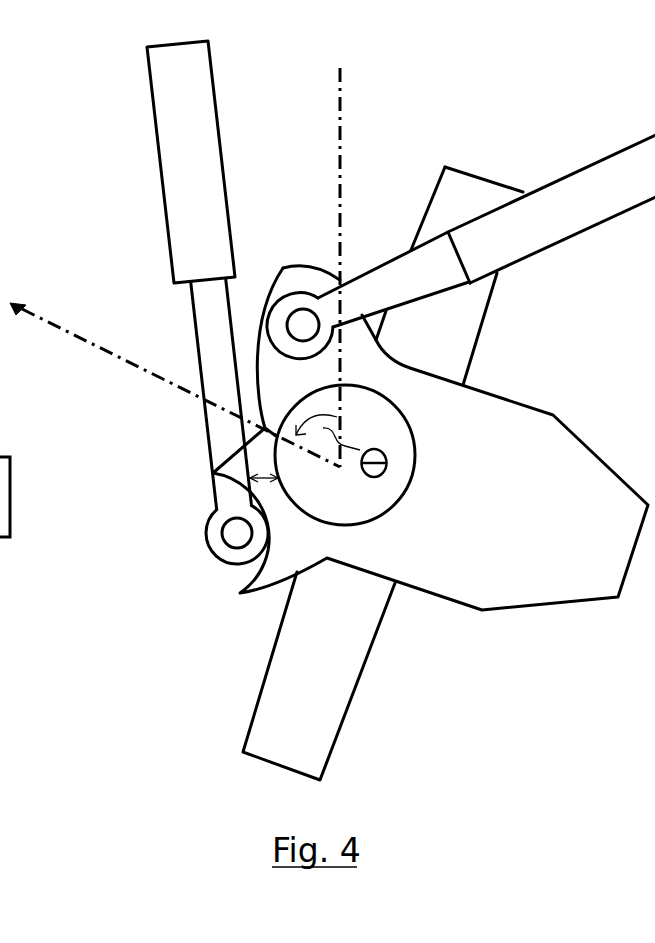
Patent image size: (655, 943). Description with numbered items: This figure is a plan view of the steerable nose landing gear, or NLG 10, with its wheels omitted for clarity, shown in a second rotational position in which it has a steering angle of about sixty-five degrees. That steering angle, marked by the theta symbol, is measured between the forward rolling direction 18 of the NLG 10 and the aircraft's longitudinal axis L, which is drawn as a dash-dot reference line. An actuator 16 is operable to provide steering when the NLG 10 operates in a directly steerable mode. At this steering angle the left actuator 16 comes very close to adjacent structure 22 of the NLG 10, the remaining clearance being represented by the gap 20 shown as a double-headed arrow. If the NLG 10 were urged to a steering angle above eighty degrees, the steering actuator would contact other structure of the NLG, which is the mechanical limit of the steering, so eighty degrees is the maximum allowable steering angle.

The nose landing gear 10 is at (160, 527).
The actuator 16 is at (168, 160).
The forward rolling direction 18 is at (53, 330).
The gap 20 is at (260, 472).
The adjacent structure 22 is at (278, 492).
The longitudinal axis L is at (333, 173).